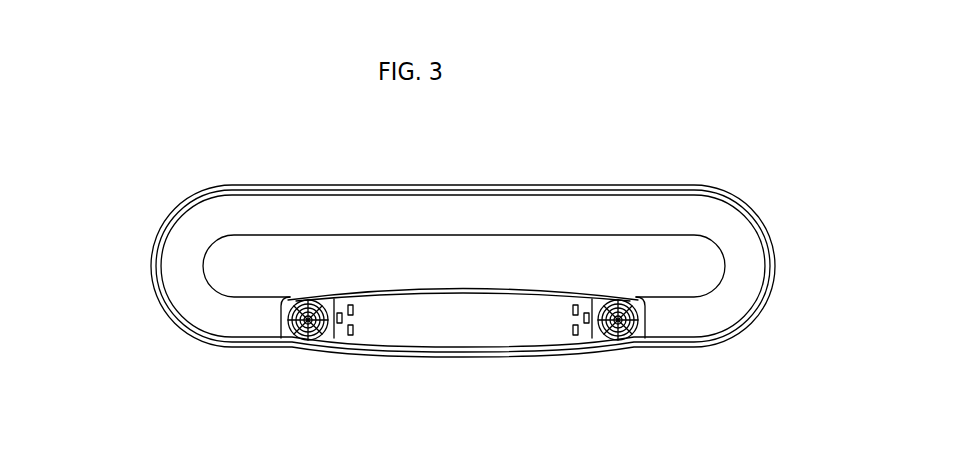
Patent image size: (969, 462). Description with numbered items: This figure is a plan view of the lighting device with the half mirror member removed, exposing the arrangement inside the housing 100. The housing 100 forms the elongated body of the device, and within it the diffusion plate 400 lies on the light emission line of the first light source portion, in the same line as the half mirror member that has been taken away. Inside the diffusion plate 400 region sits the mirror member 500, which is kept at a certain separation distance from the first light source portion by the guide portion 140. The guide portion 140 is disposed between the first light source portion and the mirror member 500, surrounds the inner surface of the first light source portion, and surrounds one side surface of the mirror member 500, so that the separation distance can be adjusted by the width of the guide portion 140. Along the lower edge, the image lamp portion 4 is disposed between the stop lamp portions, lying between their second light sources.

The housing 100 is at (158, 211).
The guide portion 140 is at (203, 263).
The diffusion plate 400 is at (574, 216).
The mirror member 500 is at (498, 268).
The image lamp portion 4 is at (454, 330).